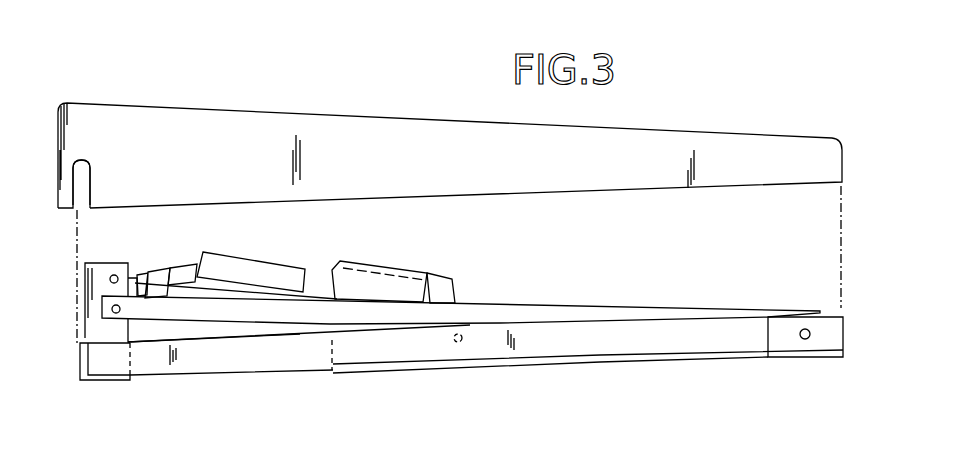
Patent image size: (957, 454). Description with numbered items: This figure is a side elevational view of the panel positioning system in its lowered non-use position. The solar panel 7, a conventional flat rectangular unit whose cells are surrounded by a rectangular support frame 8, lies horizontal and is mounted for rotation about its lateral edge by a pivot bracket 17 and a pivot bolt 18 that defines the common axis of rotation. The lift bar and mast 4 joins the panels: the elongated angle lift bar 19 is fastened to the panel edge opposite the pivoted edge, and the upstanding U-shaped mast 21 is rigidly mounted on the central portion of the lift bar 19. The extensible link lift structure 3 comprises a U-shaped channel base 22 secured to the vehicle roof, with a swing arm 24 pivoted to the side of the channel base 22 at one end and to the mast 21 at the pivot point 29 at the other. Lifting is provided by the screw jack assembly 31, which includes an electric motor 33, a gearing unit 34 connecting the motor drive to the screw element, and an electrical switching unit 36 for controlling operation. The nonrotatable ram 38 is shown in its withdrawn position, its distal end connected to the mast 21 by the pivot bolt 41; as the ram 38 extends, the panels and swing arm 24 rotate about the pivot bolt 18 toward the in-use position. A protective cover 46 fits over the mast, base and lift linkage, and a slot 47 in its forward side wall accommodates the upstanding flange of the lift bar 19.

The extensible link lift structure 3 is at (331, 247).
The lift bar and mast 4 is at (58, 352).
The solar panel 7 is at (176, 374).
The rectangular support frame 8 is at (272, 362).
The pivot bracket 17 is at (832, 335).
The pivot bolt 18 is at (805, 328).
The lift bar 19 is at (108, 382).
The mast 21 is at (85, 287).
The channel base 22 is at (615, 372).
The swing arm 24 is at (495, 312).
The pivot point 29 is at (121, 309).
The screw jack assembly 31 is at (183, 276).
The electric motor 33 is at (400, 276).
The gearing unit 34 is at (447, 290).
The electrical switching unit 36 is at (236, 260).
The ram 38 is at (134, 272).
The pivot bolt 41 is at (111, 275).
The cover 46 is at (413, 128).
The slot 47 is at (85, 188).